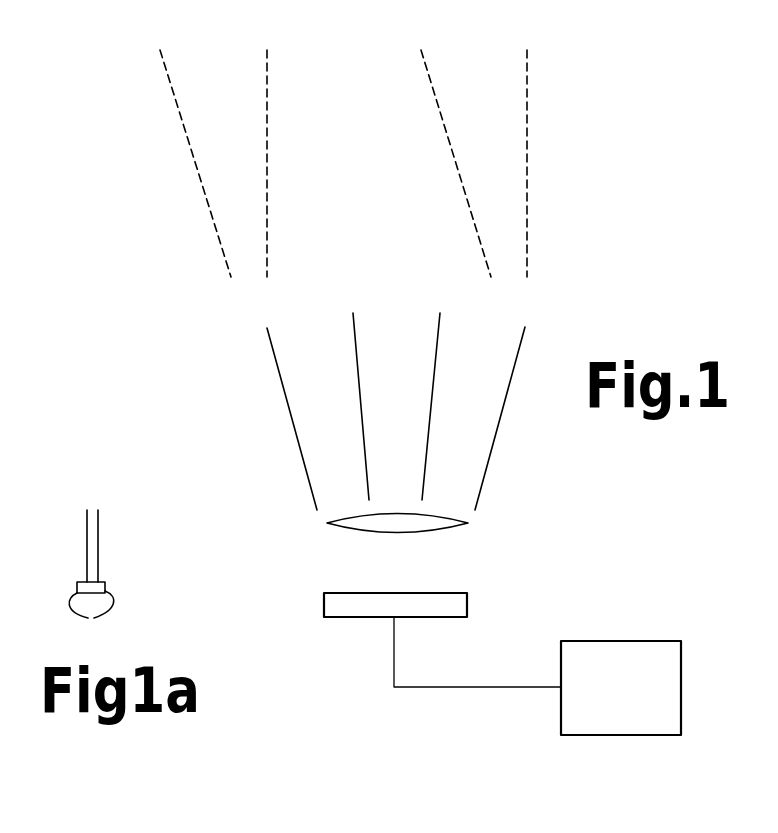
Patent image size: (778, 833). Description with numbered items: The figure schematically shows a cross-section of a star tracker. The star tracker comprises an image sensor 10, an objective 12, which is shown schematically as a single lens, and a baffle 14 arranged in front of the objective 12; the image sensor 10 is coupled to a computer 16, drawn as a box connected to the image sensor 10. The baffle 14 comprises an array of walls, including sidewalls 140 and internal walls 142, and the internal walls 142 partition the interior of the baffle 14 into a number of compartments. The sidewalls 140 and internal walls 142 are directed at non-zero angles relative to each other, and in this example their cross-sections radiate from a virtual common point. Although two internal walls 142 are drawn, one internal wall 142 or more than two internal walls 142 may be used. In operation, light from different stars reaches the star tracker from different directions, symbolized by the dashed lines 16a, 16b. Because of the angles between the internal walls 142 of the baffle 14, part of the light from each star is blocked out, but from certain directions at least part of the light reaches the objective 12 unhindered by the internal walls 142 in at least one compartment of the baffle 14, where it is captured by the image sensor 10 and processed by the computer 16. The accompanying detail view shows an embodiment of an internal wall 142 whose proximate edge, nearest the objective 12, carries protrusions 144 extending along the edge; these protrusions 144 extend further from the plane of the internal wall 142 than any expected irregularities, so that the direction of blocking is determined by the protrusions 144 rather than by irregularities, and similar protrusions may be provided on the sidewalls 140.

In FIG. 1, the image sensor 10 is at (324, 603).
In FIG. 1, the objective 12 is at (327, 523).
In FIG. 1, the baffle 14 is at (559, 482).
In FIG. 1, the controller 16 is at (622, 641).
In FIG. 1, the dashed line 16a is at (267, 157).
In FIG. 1, the dashed line 16b is at (156, 76).
In FIG. 1, the sidewall 140 is at (279, 368).
In FIG. 1, the internal wall 142 is at (357, 358).
In FIG. 1A, the internal wall 142 is at (87, 530).
In FIG. 1A, the protrusions 144 is at (91, 610).